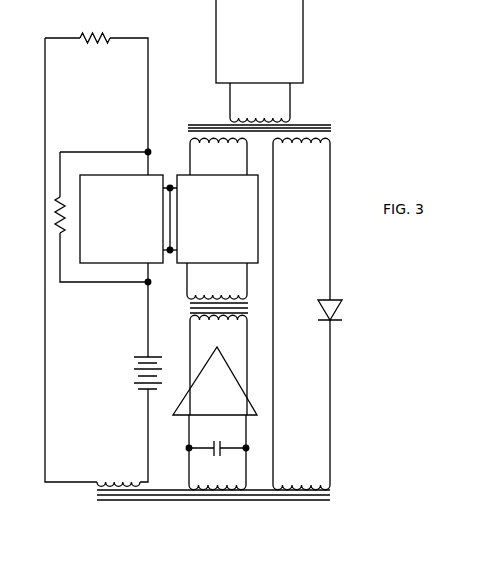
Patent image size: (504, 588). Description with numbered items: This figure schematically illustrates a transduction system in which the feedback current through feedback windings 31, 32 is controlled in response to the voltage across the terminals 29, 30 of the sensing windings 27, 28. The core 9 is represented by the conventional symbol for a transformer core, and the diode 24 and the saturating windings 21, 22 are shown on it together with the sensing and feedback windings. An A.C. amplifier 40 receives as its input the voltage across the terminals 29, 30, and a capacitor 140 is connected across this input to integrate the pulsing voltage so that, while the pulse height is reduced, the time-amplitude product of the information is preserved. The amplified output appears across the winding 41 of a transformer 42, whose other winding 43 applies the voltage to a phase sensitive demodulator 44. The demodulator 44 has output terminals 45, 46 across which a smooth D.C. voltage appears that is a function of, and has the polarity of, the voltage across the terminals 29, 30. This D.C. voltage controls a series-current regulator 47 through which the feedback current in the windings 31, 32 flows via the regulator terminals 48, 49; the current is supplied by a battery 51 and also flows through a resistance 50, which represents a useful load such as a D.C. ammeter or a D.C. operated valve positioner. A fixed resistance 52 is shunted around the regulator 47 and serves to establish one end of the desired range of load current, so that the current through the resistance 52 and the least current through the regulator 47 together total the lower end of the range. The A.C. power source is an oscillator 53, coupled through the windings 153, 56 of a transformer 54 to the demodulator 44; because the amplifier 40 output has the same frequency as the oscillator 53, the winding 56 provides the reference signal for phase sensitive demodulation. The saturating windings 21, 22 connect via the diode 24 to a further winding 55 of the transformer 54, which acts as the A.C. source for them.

The core 9 is at (200, 501).
The saturating winding 21 is at (318, 464).
The saturating winding 22 is at (301, 473).
The diode 24 is at (326, 318).
The sensing winding 27 is at (193, 484).
The sensing winding 28 is at (217, 452).
The terminal 29 is at (176, 442).
The terminal 30 is at (248, 447).
The feedback winding 31 is at (100, 479).
The feedback winding 32 is at (118, 467).
The A.C. amplifier 40 is at (226, 397).
The winding 41 is at (222, 324).
The transformer 42 is at (188, 306).
The winding 43 is at (217, 281).
The phase sensitive demodulator 44 is at (227, 231).
The output terminal 45 is at (170, 253).
The output terminal 46 is at (170, 186).
The series-current regulator 47 is at (130, 231).
The regulator terminal 48 is at (146, 284).
The regulator terminal 49 is at (146, 150).
The resistance 50 is at (100, 37).
The battery 51 is at (133, 377).
The fixed resistance 52 is at (57, 216).
The oscillator 53 is at (265, 47).
The transformer 54 is at (195, 124).
The winding 55 is at (315, 143).
The winding 56 is at (218, 156).
The capacitor 140 is at (214, 445).
The winding 153 is at (248, 117).